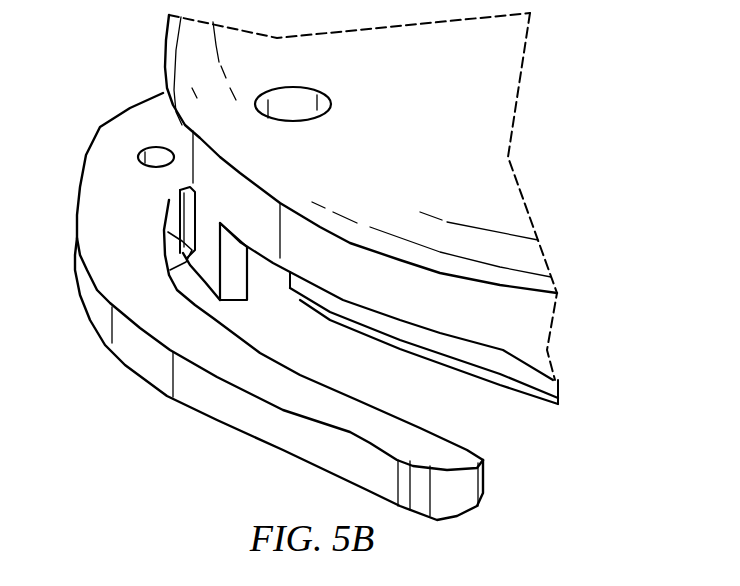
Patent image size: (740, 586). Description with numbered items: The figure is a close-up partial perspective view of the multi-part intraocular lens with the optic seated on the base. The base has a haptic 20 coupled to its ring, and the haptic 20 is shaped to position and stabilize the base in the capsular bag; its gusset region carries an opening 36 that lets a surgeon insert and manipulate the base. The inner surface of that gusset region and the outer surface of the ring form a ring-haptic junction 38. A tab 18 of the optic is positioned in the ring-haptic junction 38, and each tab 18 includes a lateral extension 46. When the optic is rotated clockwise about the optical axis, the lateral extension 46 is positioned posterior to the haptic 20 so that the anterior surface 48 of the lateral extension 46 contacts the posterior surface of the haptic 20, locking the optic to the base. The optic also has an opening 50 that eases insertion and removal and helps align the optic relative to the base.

The tab 18 is at (235, 262).
The haptic 20 is at (139, 358).
The opening 36 is at (147, 133).
The ring-haptic junction 38 is at (194, 289).
The lateral extension 46 is at (188, 238).
The anterior surface 48 is at (185, 226).
The opening 50 is at (293, 86).